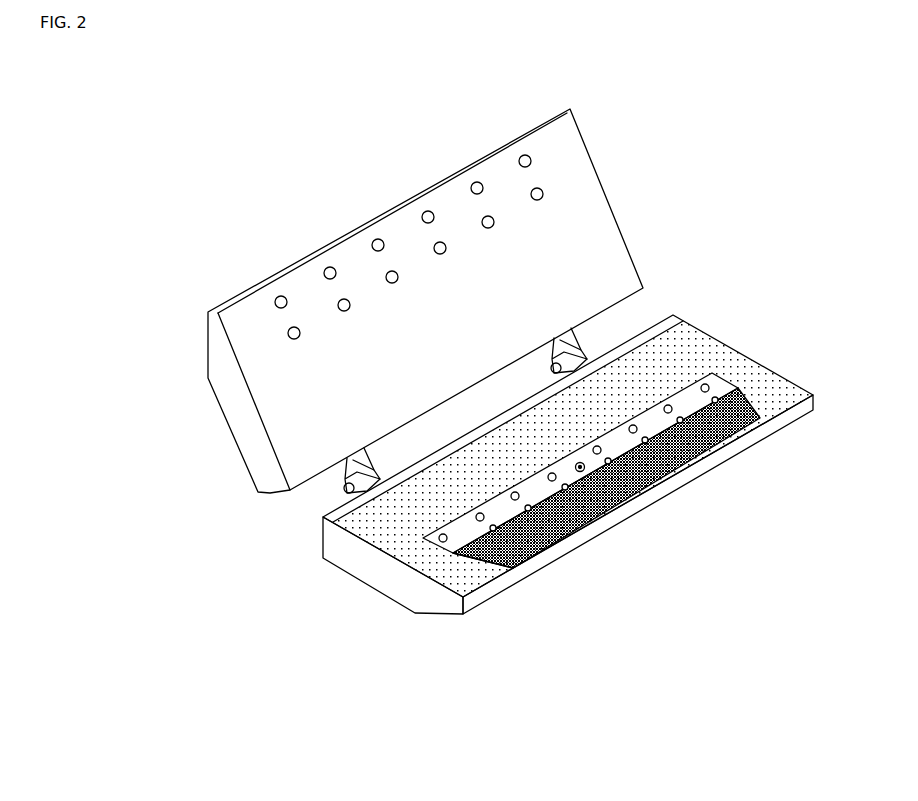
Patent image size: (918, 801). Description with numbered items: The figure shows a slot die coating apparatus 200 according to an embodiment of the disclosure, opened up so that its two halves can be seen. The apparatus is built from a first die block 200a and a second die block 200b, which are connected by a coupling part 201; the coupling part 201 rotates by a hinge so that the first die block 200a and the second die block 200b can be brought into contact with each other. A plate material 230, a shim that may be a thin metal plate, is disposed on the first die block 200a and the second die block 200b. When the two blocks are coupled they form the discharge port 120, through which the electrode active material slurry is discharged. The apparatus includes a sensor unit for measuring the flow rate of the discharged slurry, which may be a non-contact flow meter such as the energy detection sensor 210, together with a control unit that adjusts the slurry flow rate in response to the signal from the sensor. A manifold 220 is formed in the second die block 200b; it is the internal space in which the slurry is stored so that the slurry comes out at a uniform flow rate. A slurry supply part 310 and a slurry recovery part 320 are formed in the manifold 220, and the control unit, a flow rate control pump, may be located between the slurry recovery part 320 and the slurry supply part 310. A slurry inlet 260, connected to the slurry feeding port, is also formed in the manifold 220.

The slot die coating apparatus 200 is at (769, 166).
The first die block 200a is at (622, 223).
The second die block 200b is at (697, 323).
The coupling part 201 is at (344, 488).
The energy detection sensor 210 is at (375, 238).
The manifold 220 is at (723, 383).
The plate material 230 is at (370, 522).
The discharge port 120 is at (702, 442).
The slurry inlet 260 is at (583, 468).
The slurry supply part 310 is at (519, 496).
The slurry recovery part 320 is at (452, 553).